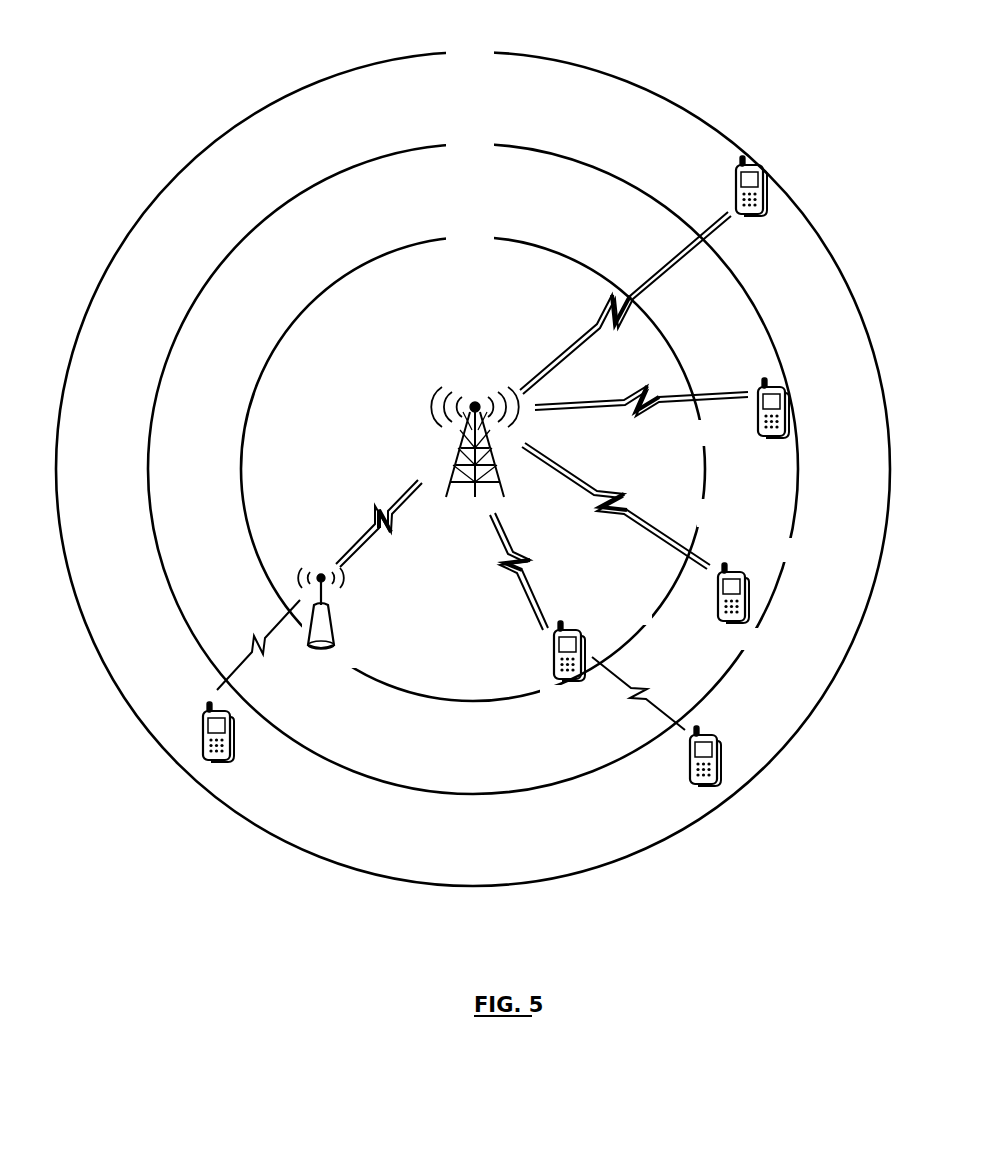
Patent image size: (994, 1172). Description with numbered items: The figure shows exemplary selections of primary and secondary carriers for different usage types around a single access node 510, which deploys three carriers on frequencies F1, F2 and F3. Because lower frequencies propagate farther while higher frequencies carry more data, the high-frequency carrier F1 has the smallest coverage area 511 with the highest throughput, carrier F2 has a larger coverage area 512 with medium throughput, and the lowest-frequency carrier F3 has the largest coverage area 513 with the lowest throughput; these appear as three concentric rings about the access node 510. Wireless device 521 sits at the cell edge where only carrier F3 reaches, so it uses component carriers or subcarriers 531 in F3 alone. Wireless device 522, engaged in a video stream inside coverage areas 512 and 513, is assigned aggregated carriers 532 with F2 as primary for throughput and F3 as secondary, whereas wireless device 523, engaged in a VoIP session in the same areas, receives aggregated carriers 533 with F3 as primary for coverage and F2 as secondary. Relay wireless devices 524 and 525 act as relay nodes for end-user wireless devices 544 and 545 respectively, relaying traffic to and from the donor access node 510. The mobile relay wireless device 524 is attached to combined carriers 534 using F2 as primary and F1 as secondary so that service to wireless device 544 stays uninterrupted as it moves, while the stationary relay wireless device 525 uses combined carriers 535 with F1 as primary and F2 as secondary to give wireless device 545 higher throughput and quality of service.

The access node 510 is at (460, 462).
The coverage area of carrier F1 511 is at (440, 238).
The coverage area of carrier F2 512 is at (440, 146).
The coverage area of carrier F3 513 is at (440, 53).
The wireless device 521 is at (758, 168).
The wireless device 522 is at (781, 390).
The wireless device 523 is at (739, 575).
The relay wireless device 524 is at (569, 632).
The relay wireless device 525 is at (333, 637).
The component carriers or subcarriers 531 is at (642, 294).
The aggregated carriers 532 is at (645, 416).
The aggregated carriers 533 is at (636, 526).
The combined carriers 534 is at (530, 588).
The combined carriers 535 is at (380, 522).
The wireless device 544 is at (711, 737).
The wireless device 545 is at (228, 755).